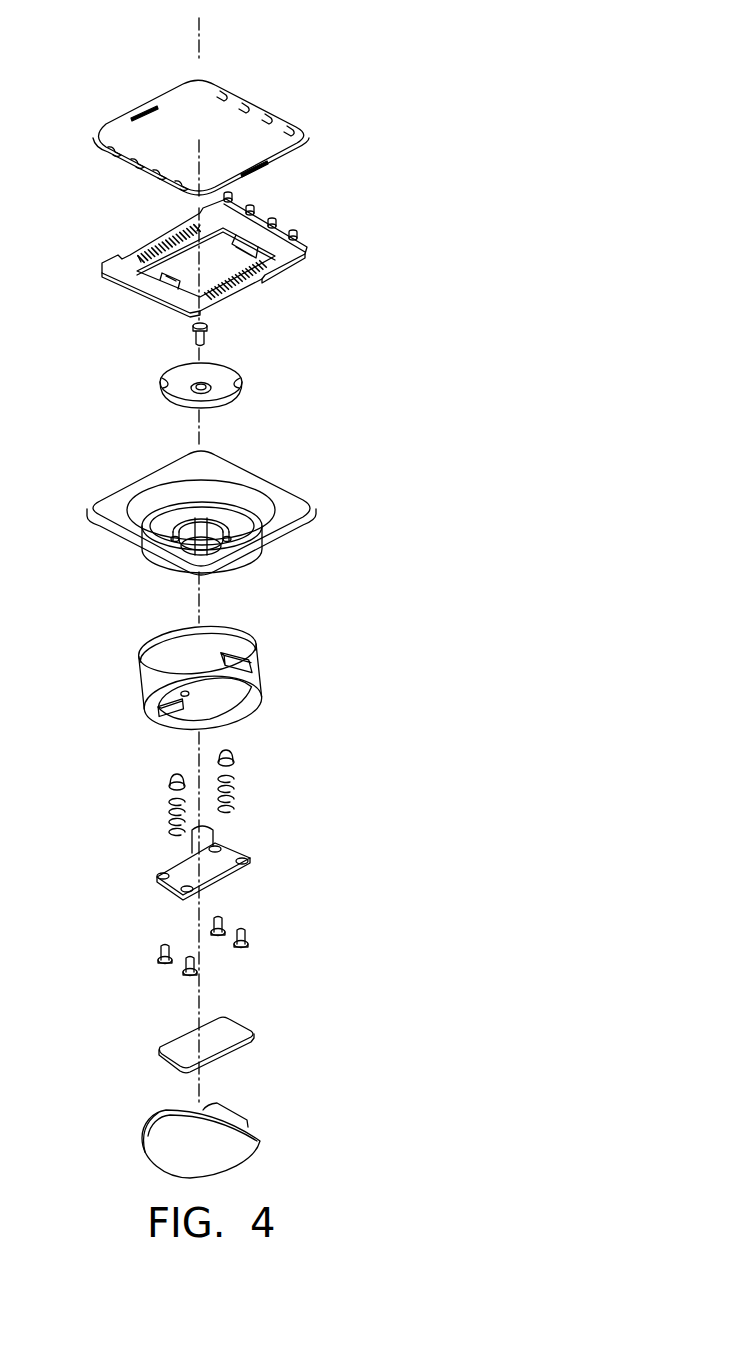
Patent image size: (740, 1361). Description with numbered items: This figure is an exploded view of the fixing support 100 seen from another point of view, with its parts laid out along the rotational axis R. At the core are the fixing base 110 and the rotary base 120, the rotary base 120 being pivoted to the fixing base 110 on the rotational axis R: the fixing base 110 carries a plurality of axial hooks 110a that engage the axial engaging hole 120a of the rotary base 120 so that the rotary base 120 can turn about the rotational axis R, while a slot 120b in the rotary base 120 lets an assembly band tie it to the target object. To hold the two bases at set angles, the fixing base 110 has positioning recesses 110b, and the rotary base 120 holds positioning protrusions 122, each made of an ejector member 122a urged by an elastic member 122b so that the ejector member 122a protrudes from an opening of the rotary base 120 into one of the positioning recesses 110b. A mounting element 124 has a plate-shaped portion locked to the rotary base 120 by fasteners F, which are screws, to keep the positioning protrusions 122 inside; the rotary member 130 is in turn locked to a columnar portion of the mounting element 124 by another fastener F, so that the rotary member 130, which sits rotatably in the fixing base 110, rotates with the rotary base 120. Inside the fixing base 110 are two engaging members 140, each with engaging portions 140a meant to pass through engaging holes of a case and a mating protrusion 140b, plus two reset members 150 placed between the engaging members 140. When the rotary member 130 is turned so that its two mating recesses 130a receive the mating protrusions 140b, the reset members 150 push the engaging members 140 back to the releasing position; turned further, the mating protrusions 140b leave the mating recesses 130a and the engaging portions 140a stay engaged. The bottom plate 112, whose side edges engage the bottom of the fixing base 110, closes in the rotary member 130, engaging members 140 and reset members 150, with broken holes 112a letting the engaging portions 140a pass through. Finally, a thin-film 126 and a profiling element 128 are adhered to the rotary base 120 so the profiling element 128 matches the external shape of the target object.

The fixing support 100 is at (356, 52).
The fixing base 110 is at (225, 519).
The axial hooks 110a is at (238, 534).
The positioning recesses 110b is at (174, 544).
The bottom plate 112 is at (287, 143).
The broken holes 112a is at (292, 125).
The rotary base 120 is at (245, 682).
The axial engaging hole 120a is at (208, 681).
The slot 120b is at (246, 662).
The positioning protrusion 122 is at (278, 790).
The ejector member 122a is at (235, 754).
The elastic member 122b is at (237, 799).
The mounting element 124 is at (225, 866).
The thin-film 126 is at (237, 1039).
The profiling element 128 is at (237, 1149).
The rotary member 130 is at (251, 387).
The mating recesses 130a is at (243, 383).
The engaging members 140 is at (214, 262).
The engaging portions 140a is at (293, 234).
The mating protrusion 140b is at (260, 262).
The reset members 150 is at (168, 241).
The fasteners F is at (207, 333).
The rotational axis R is at (215, 558).